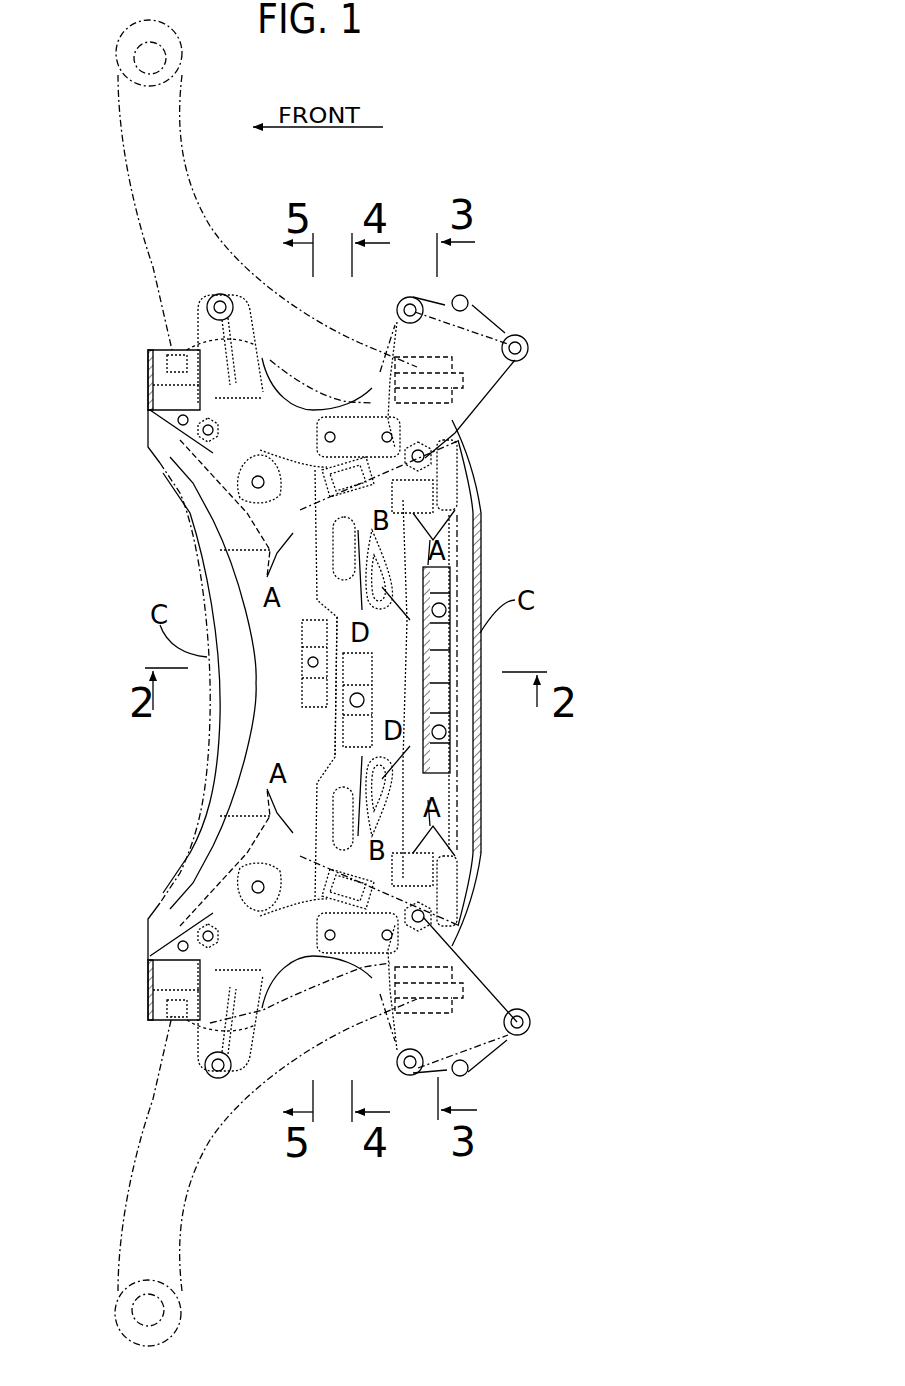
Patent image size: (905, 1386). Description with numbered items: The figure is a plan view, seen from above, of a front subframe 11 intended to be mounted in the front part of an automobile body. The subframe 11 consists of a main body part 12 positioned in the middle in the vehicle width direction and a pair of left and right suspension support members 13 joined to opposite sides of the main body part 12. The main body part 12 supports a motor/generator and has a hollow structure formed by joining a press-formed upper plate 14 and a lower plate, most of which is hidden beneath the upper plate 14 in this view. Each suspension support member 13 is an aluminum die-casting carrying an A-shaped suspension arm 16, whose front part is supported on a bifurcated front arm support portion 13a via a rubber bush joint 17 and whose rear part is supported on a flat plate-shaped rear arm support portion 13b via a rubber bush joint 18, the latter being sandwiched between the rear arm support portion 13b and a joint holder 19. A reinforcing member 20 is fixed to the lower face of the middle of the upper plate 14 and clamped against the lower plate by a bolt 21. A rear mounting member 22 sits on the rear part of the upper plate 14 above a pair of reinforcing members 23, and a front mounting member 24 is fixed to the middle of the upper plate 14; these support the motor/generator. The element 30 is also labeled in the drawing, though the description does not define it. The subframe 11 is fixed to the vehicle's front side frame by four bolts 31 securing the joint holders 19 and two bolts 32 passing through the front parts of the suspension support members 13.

The front subframe 11 is at (492, 546).
The main body part 12 is at (490, 652).
The suspension support member 13 is at (140, 436).
The front arm support portion 13a is at (148, 368).
The rear arm support portion 13b is at (473, 343).
The upper plate 14 is at (482, 797).
The suspension arm 16 is at (177, 150).
The rubber bush joint 17 is at (147, 378).
The rubber bush joint 18 is at (450, 390).
The joint holder 19 is at (390, 358).
The reinforcing member 20 is at (305, 683).
The bolt 21 is at (310, 660).
The rear mounting member 22 is at (445, 675).
The reinforcing member 23 is at (458, 588).
The front mounting member 24 is at (364, 700).
The nut 30 is at (432, 445).
The bolt 31 is at (410, 297).
The bolt 32 is at (220, 293).